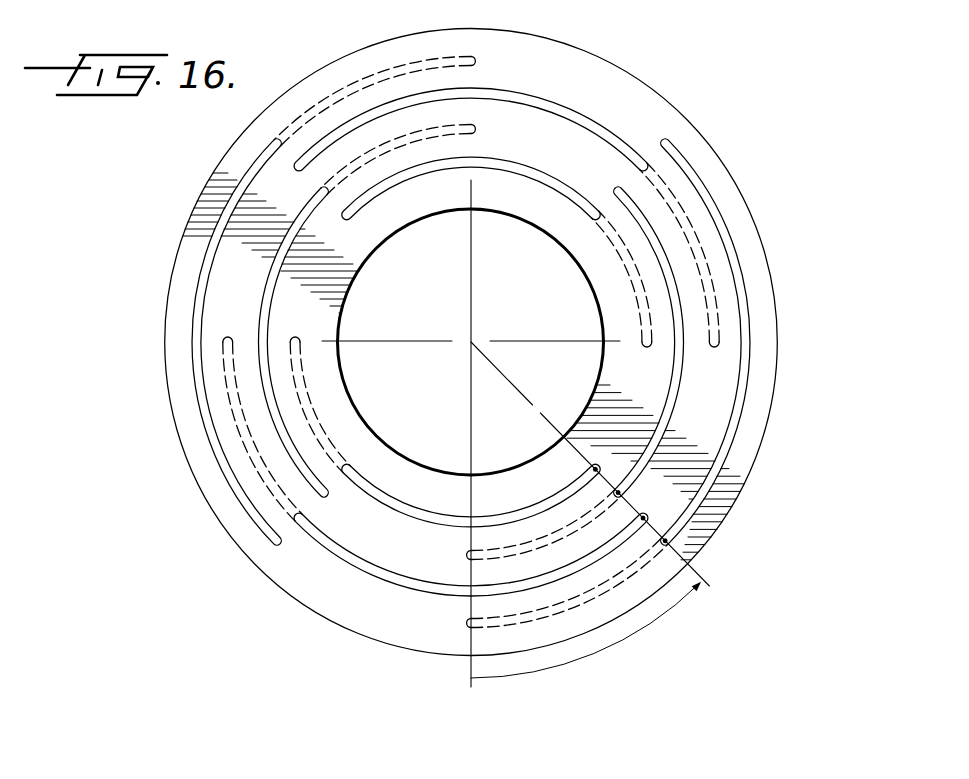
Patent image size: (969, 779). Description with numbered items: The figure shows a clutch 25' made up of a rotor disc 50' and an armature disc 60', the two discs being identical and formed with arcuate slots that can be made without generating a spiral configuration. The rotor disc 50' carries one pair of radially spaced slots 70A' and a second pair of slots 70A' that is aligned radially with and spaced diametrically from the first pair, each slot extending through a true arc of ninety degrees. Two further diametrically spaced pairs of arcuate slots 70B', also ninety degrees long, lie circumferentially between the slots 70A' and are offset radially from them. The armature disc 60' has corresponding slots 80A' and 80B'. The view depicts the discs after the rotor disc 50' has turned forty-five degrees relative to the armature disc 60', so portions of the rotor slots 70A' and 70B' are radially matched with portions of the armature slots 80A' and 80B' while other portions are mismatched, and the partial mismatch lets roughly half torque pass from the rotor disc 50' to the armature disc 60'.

The clutch 25' is at (478, 357).
The rotor disc 50' is at (498, 342).
The armature disc 60' is at (521, 366).
The radially spaced slots 70A' is at (448, 358).
The arcuate slots 70B' is at (474, 342).
The armature slots 80A' is at (467, 341).
The armature slots 80B' is at (480, 332).